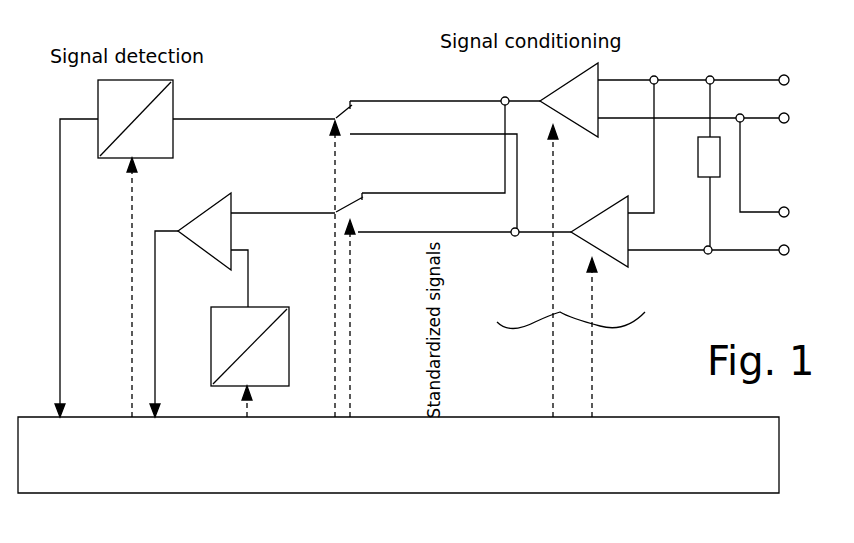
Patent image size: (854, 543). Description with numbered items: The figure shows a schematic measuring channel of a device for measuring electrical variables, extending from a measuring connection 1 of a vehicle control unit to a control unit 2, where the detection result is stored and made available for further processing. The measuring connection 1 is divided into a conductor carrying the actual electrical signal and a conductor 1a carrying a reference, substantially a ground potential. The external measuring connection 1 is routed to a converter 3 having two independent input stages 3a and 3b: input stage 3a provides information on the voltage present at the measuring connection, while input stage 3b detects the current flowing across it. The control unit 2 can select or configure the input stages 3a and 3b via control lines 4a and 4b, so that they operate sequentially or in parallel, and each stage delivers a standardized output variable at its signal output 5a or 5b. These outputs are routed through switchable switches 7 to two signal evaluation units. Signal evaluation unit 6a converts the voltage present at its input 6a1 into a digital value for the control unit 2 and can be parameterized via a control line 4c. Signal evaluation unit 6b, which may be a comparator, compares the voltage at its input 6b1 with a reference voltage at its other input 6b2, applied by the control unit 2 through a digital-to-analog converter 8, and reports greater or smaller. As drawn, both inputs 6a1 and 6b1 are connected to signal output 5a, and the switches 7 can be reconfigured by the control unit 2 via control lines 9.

The measuring connection 1 is at (783, 75).
The conductor with a reference 1a is at (786, 123).
The control unit 2 is at (146, 468).
The converter 3 is at (571, 334).
The input stage 3a is at (598, 127).
The input stage 3b is at (630, 258).
The control line 4a is at (550, 372).
The control line 4b is at (600, 388).
The control line 4c is at (132, 285).
The signal output 5a is at (356, 101).
The signal output 5b is at (356, 134).
The signal evaluation unit 6a is at (110, 160).
The input 6a1 is at (254, 105).
The signal evaluation unit 6b is at (206, 250).
The input 6b1 is at (283, 201).
The input 6b2 is at (251, 268).
The switchable switches 7 is at (333, 116).
The digital-to-analog converter 8 is at (211, 340).
The control lines 9 is at (350, 300).